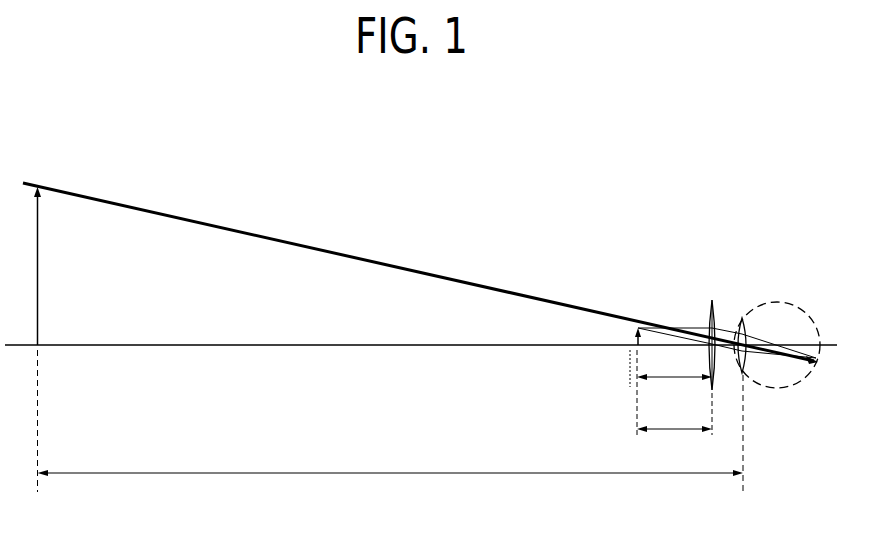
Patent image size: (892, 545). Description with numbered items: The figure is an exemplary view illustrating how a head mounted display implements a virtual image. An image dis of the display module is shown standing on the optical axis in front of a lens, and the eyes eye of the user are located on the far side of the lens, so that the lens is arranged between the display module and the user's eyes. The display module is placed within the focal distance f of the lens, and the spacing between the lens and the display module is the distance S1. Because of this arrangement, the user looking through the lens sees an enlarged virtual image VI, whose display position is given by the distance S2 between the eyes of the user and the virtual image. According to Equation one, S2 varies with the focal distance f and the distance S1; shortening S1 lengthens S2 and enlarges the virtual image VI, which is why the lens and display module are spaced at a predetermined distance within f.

The virtual image VI is at (39, 272).
The image of the display module dis is at (636, 332).
The element lens is at (712, 300).
The eyes of the user eye is at (787, 303).
The focal distance of the lens f is at (674, 392).
The distance between the lens and the display module S1 is at (674, 441).
The distance between the eyes of the user and the display position of the virtual im S2 is at (391, 425).